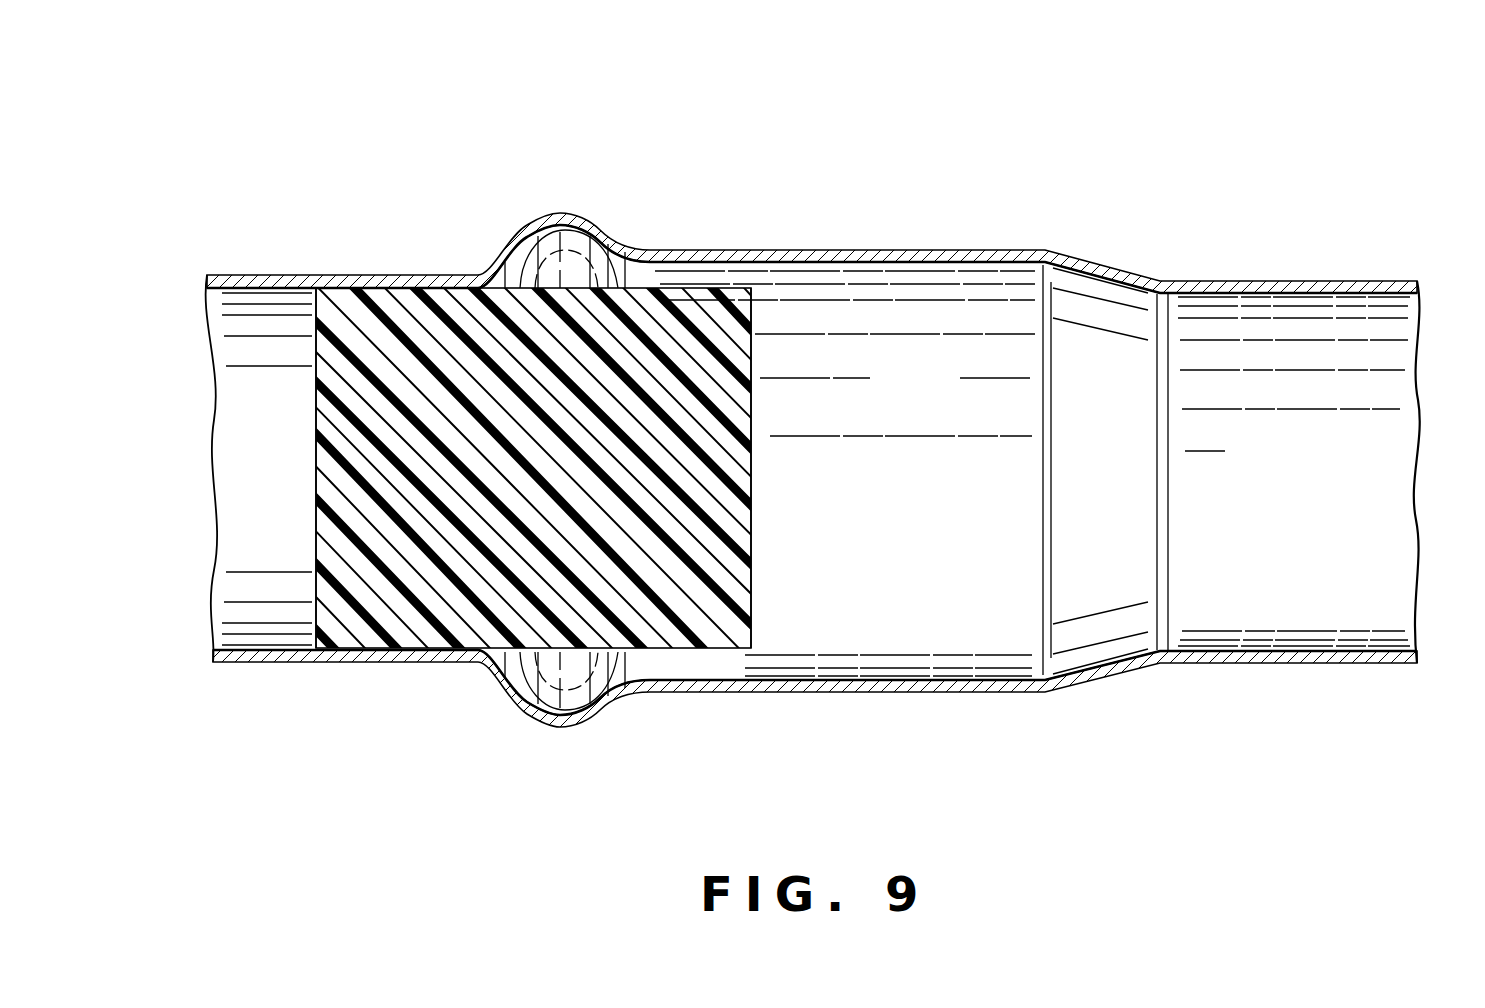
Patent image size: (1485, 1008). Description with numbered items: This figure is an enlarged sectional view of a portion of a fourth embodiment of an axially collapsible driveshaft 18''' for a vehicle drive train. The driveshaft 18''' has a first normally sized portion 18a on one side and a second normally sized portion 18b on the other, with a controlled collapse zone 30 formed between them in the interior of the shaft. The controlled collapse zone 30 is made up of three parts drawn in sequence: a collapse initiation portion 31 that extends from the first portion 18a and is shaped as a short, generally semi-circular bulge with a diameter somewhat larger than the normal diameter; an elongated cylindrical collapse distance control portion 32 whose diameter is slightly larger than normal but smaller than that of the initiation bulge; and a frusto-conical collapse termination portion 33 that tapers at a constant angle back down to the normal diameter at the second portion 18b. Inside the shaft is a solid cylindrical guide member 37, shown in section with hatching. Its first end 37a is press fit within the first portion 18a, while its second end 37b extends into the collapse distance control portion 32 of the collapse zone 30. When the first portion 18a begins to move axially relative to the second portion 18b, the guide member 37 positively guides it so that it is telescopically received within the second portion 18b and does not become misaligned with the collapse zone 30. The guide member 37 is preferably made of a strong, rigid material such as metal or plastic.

The axially collapsible driveshaft 18''' is at (812, 393).
The first normally sized portion 18a is at (265, 278).
The second normally sized portion 18b is at (1370, 288).
The controlled collapse zone 30 is at (1172, 750).
The collapse initiation portion 31 is at (627, 148).
The collapse distance control portion 32 is at (1038, 148).
The collapse termination portion 33 is at (1165, 148).
The guide member 37 is at (770, 485).
The first end of guide member 37a is at (340, 343).
The second end of guide member 37b is at (742, 343).